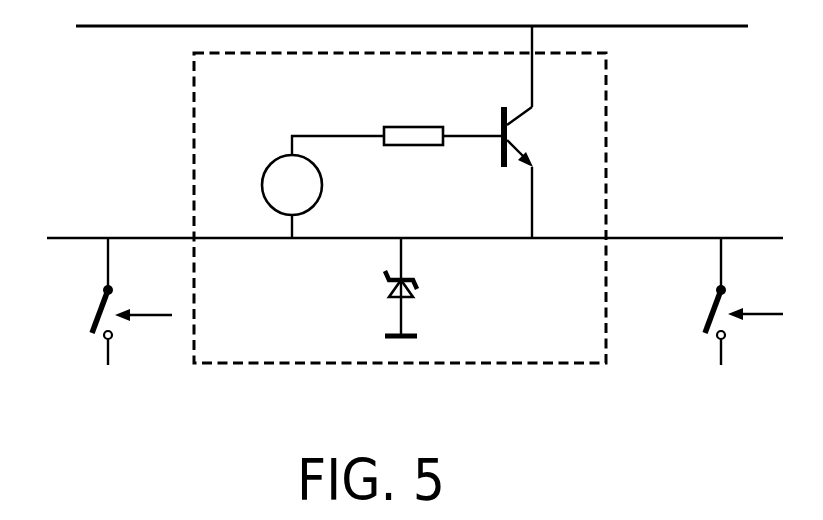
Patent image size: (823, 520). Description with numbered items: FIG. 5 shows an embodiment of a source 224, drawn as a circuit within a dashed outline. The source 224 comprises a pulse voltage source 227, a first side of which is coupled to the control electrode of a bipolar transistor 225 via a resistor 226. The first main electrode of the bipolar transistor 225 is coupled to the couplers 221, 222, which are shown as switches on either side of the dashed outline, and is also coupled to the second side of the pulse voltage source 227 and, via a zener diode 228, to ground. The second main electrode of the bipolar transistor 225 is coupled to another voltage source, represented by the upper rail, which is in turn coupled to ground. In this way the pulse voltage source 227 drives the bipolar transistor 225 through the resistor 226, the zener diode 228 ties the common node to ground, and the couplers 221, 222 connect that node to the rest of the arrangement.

The coupler 221 is at (98, 310).
The coupler 222 is at (710, 312).
The source 224 is at (607, 161).
The bipolar transistor 225 is at (518, 120).
The resistor 226 is at (413, 127).
The pulse voltage source 227 is at (272, 162).
The zener diode 228 is at (395, 290).